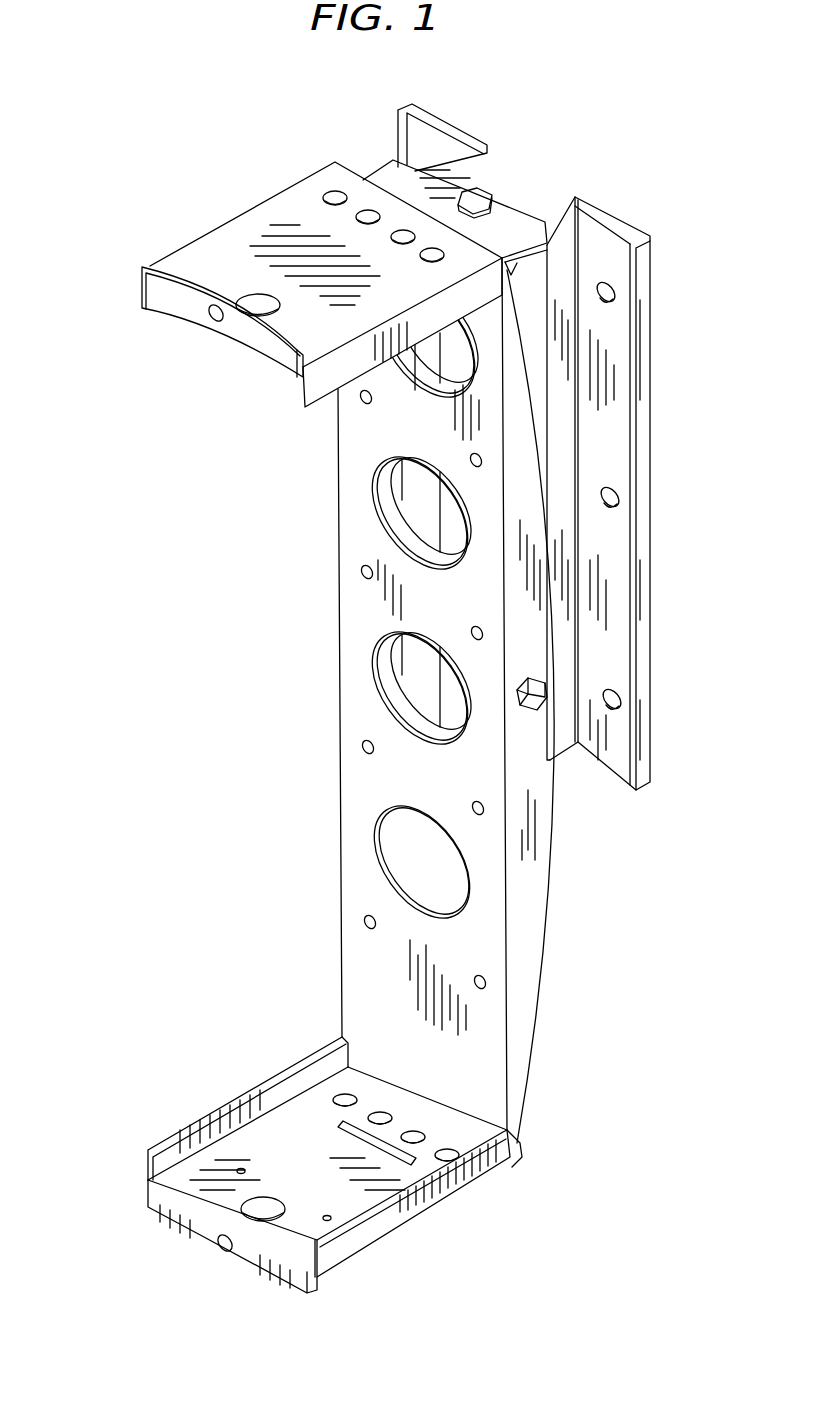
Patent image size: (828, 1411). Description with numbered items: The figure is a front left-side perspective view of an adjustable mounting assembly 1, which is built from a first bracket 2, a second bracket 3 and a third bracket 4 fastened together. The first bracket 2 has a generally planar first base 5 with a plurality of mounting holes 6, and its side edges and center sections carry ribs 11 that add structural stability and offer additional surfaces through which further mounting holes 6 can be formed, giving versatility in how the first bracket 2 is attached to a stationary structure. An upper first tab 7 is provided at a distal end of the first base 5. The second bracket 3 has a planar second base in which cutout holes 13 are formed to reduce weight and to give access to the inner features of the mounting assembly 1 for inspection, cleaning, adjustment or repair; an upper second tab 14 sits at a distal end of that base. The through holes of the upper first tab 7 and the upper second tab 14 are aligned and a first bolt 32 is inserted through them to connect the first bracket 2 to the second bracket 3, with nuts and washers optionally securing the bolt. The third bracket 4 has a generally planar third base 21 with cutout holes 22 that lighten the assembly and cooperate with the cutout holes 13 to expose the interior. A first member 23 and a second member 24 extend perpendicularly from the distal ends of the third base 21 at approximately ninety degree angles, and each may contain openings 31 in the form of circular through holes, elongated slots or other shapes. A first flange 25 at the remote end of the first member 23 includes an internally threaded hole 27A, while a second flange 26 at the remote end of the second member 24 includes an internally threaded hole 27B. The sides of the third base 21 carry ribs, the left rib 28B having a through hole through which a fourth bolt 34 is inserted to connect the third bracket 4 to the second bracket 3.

The adjustable mounting assembly 1 is at (148, 458).
The first bracket 2 is at (672, 312).
The second bracket 3 is at (383, 162).
The third bracket 4 is at (565, 977).
The first base 5 is at (615, 440).
The mounting holes 6 is at (617, 698).
The upper first tab 7 is at (528, 205).
The ribs 11 is at (565, 237).
The cutout holes 13 is at (407, 697).
The upper second tab 14 is at (514, 245).
The third base 21 is at (363, 970).
The cutout holes 22 is at (380, 697).
The first member 23 is at (248, 250).
The second member 24 is at (338, 1177).
The first flange 25 is at (160, 285).
The second flange 26 is at (275, 1268).
The hole 27A is at (213, 318).
The hole 27B is at (217, 1250).
The left rib 28B is at (524, 867).
The openings 31 is at (450, 1152).
The first bolt 32 is at (480, 193).
The fourth bolt 34 is at (548, 688).